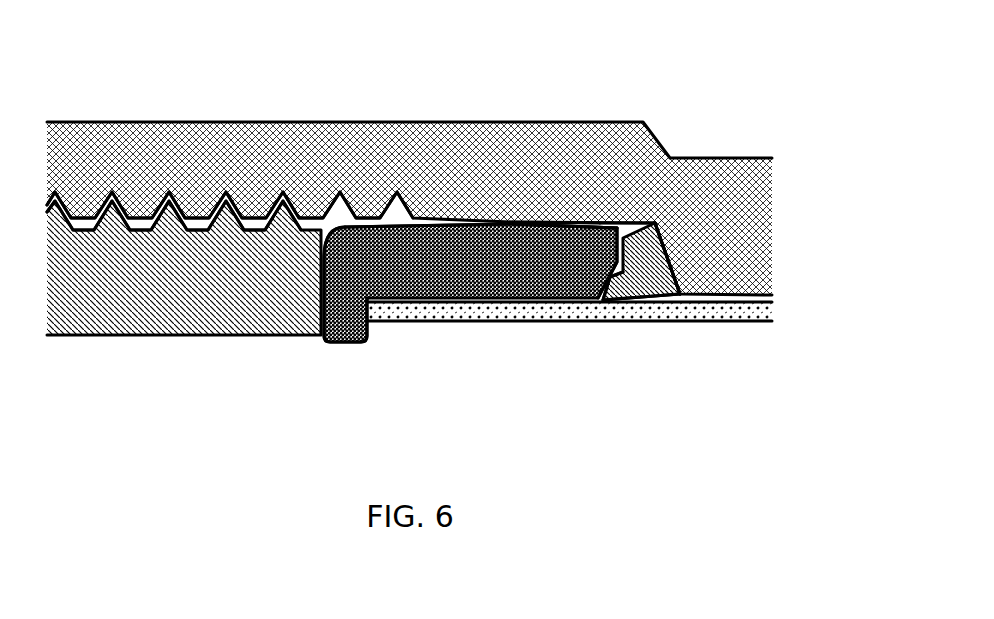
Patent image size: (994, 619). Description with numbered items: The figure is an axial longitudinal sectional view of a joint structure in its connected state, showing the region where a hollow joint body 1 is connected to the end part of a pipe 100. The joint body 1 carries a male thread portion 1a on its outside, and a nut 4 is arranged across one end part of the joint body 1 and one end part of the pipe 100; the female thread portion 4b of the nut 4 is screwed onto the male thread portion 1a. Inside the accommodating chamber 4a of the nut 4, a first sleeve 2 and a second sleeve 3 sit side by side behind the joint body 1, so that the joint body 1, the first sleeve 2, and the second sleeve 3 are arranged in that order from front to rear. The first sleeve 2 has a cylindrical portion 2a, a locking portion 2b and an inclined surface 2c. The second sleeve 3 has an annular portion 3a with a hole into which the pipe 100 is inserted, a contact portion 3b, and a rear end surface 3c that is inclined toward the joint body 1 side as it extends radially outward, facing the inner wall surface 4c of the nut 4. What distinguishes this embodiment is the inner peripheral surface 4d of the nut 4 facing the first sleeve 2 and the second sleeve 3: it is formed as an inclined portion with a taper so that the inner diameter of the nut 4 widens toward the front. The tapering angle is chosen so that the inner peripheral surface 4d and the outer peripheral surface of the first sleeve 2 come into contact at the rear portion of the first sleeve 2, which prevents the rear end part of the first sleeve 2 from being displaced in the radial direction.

The joint body 1 is at (57, 287).
The male thread portion 1a is at (168, 210).
The first sleeve 2 is at (313, 85).
The cylindrical portion 2a is at (463, 232).
The locking portion 2b is at (340, 273).
The inclined surface 2c is at (637, 227).
The second sleeve 3 is at (715, 408).
The annular portion 3a is at (620, 296).
The contact portion 3b is at (611, 272).
The rear end surface 3c is at (672, 266).
The nut 4 is at (245, 143).
The accommodating chamber 4a is at (645, 232).
The female thread portion 4b is at (233, 210).
The inner wall surface 4c is at (655, 225).
The inner peripheral surface 4d is at (553, 230).
The pipe 100 is at (735, 313).